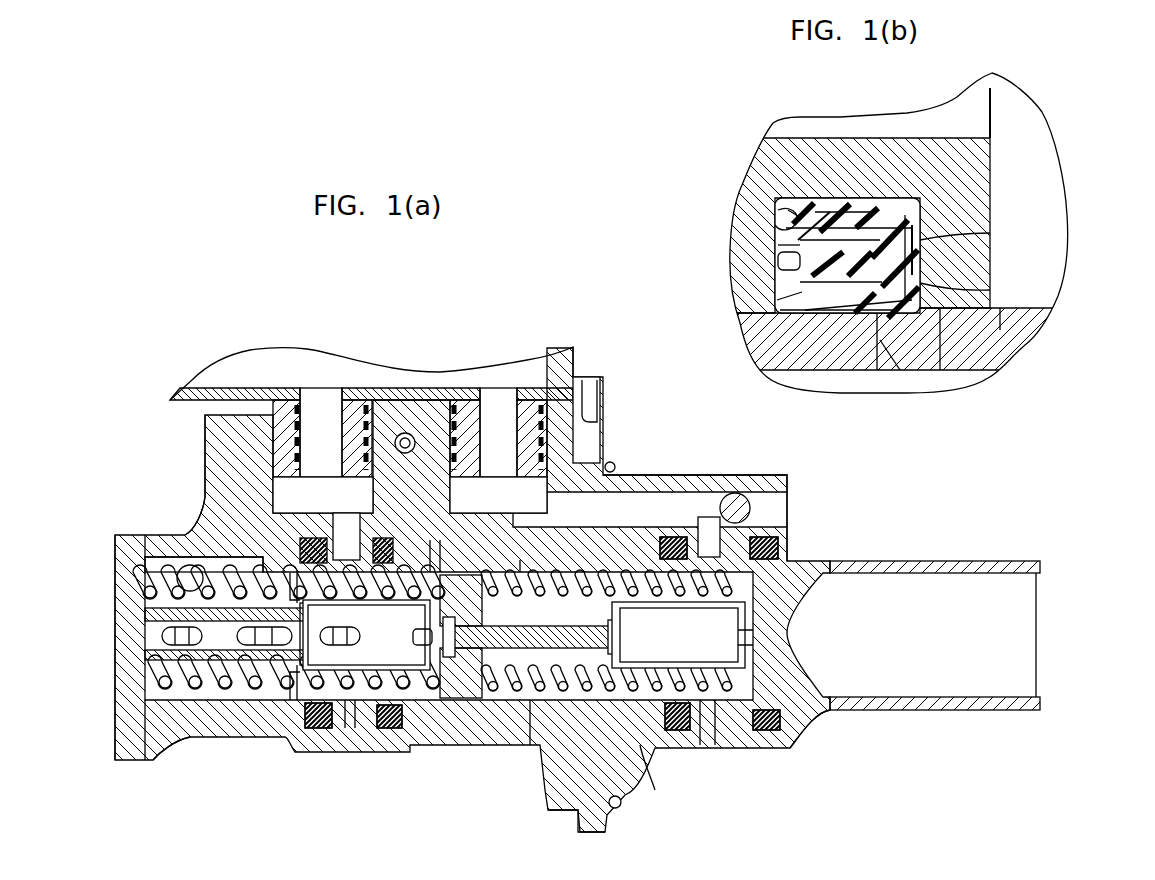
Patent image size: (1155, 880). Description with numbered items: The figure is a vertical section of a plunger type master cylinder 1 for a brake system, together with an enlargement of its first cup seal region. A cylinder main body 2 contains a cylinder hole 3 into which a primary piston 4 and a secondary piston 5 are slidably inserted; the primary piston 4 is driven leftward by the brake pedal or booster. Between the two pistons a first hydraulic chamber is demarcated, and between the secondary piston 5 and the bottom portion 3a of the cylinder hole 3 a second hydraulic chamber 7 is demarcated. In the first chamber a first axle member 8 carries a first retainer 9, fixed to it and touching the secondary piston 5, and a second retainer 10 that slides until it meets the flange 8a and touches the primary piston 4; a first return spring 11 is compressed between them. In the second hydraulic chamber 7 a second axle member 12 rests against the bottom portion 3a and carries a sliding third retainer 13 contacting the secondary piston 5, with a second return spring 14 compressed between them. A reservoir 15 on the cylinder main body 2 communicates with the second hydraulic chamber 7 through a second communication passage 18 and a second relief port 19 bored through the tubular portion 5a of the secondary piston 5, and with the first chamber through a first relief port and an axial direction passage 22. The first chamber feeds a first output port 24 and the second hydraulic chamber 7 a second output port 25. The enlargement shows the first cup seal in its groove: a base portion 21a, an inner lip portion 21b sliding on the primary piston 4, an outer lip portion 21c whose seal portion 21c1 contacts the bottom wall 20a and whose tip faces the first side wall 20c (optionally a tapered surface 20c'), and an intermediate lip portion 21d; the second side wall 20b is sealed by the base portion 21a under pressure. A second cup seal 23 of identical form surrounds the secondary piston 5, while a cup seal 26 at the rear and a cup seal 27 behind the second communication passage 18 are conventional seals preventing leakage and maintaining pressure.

The master cylinder 1 is at (229, 287).
The cylinder main body 2 is at (127, 700).
The cylinder hole 3 is at (636, 800).
The bottom portion 3a is at (147, 747).
The primary piston 4 is at (800, 690).
The secondary piston 5 is at (450, 703).
The tubular portion 5a is at (318, 730).
The second hydraulic chamber 7 is at (187, 702).
The first axle member 8 is at (563, 800).
The flange 8a is at (622, 634).
The first retainer 9 is at (464, 707).
The second retainer 10 is at (755, 742).
The first return spring 11 is at (484, 727).
The second axle member 12 is at (210, 690).
The third retainer 13 is at (394, 738).
The second return spring 14 is at (142, 580).
The reservoir 15 is at (512, 358).
The second communication passage 18 is at (348, 530).
The second relief port 19 is at (228, 470).
The bottom wall 20a is at (800, 205).
The second side wall 20b is at (915, 215).
The first side wall 20c is at (730, 201).
The tapered surface 20c' is at (731, 285).
The base portion 21a is at (990, 233).
The inner lip portion 21b is at (792, 327).
The outer lip portion 21c is at (778, 240).
The seal portion 21c1 is at (793, 215).
The intermediate lip portion 21d is at (778, 262).
The axial direction passage 22 is at (990, 290).
The second cup seal 23 is at (283, 728).
The first output port 24 is at (455, 572).
The second output port 25 is at (176, 583).
The cup seal 26 is at (792, 733).
The cup seal 27 is at (352, 748).